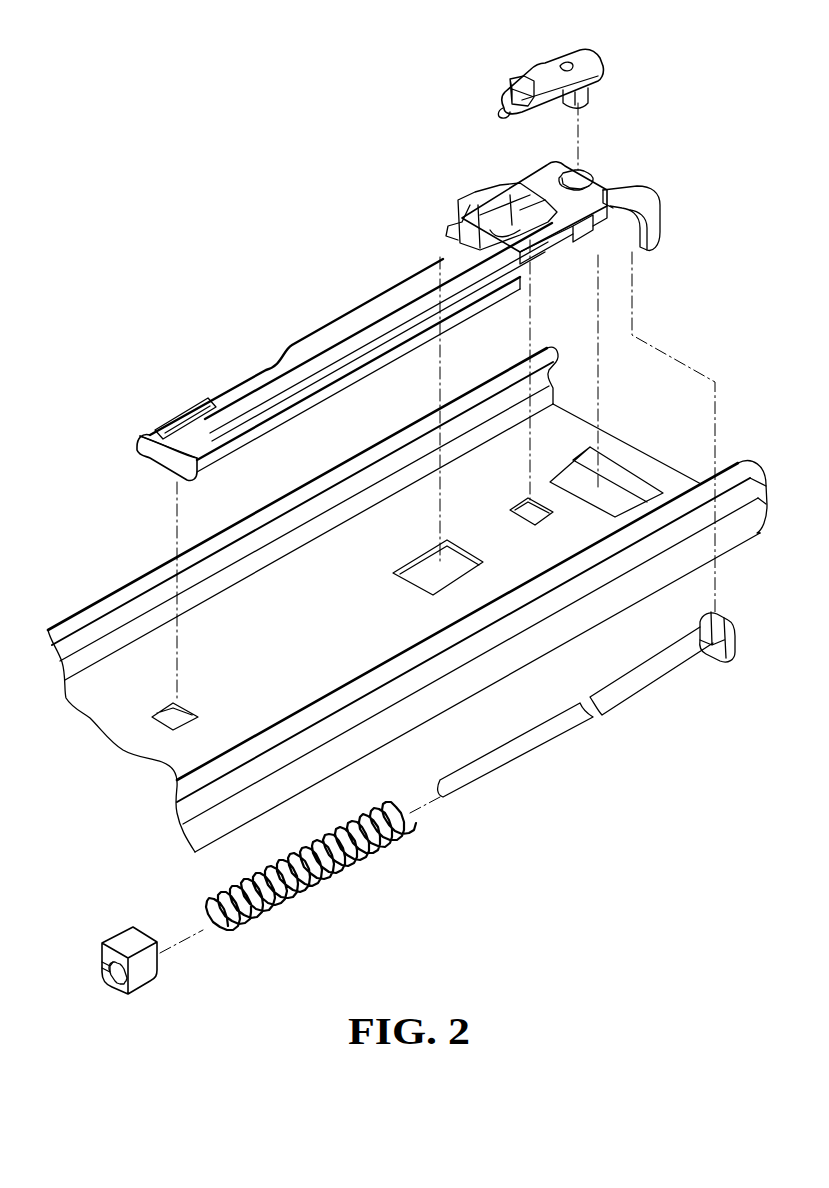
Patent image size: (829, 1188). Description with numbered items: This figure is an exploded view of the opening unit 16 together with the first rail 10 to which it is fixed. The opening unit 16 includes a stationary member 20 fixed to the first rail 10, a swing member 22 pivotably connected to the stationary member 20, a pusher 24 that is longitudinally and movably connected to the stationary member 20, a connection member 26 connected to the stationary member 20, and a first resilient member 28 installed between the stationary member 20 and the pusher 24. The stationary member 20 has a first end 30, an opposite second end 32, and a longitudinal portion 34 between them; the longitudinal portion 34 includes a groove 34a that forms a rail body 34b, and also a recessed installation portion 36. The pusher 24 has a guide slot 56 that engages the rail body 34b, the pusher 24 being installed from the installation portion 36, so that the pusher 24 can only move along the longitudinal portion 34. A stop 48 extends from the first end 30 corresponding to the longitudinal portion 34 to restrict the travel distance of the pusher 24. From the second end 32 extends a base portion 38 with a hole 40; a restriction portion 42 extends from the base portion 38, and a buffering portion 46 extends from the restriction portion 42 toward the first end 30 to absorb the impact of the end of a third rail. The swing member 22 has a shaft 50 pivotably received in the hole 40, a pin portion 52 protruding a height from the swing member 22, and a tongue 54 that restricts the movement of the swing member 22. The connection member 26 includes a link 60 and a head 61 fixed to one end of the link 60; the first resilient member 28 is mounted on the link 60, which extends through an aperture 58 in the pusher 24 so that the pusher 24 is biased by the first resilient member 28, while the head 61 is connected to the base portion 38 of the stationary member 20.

The first rail 10 is at (565, 628).
The opening unit 16 is at (424, 118).
The stationary member 20 is at (317, 359).
The swing member 22 is at (546, 75).
The pusher 24 is at (113, 984).
The connection member 26 is at (593, 704).
The first resilient member 28 is at (355, 870).
The first end 30 is at (168, 446).
The second end 32 is at (529, 192).
The longitudinal portion 34 is at (379, 345).
The groove 34a is at (283, 393).
The rail body 34b is at (283, 407).
The installation portion 36 is at (560, 255).
The base portion 38 is at (548, 180).
The hole 40 is at (590, 170).
The restriction portion 42 is at (505, 215).
The buffering portion 46 is at (455, 225).
The stop 48 is at (208, 456).
The shaft 50 is at (598, 98).
The pin portion 52 is at (518, 80).
The tongue 54 is at (500, 114).
The guide slot 56 is at (100, 967).
The aperture 58 is at (118, 985).
The link 60 is at (630, 690).
The head 61 is at (728, 665).